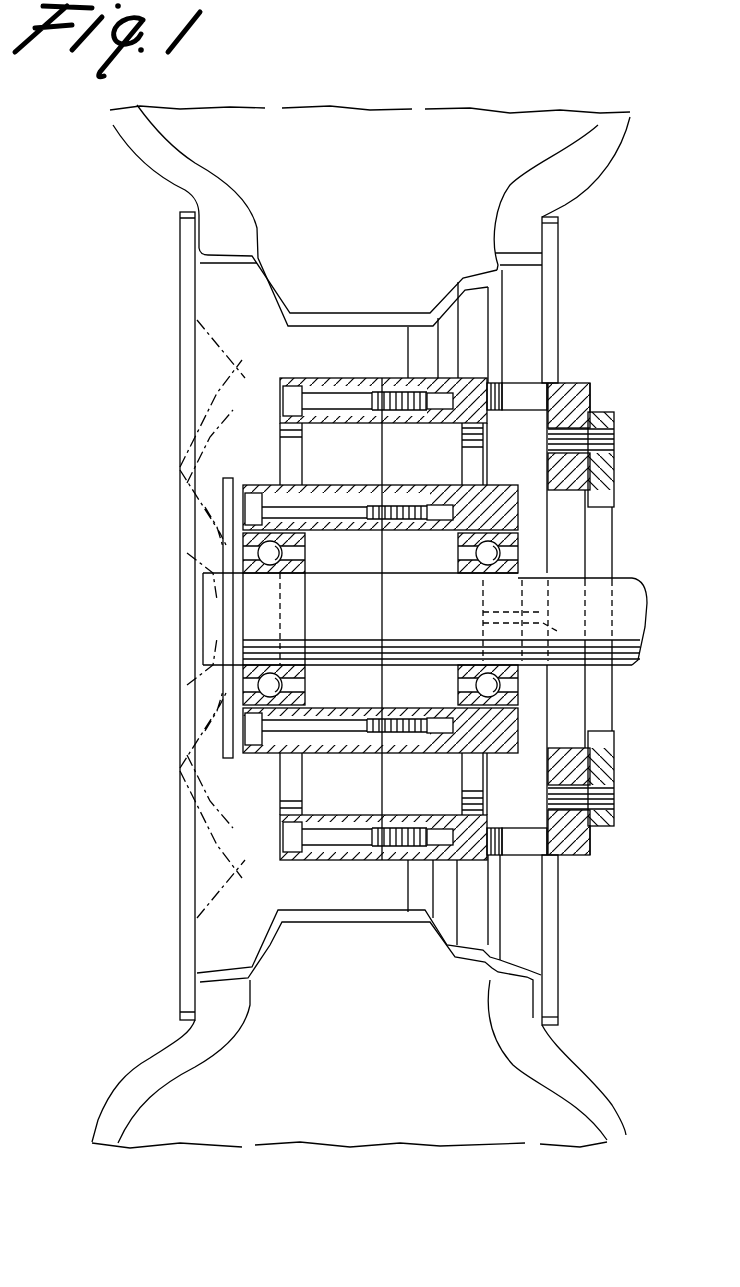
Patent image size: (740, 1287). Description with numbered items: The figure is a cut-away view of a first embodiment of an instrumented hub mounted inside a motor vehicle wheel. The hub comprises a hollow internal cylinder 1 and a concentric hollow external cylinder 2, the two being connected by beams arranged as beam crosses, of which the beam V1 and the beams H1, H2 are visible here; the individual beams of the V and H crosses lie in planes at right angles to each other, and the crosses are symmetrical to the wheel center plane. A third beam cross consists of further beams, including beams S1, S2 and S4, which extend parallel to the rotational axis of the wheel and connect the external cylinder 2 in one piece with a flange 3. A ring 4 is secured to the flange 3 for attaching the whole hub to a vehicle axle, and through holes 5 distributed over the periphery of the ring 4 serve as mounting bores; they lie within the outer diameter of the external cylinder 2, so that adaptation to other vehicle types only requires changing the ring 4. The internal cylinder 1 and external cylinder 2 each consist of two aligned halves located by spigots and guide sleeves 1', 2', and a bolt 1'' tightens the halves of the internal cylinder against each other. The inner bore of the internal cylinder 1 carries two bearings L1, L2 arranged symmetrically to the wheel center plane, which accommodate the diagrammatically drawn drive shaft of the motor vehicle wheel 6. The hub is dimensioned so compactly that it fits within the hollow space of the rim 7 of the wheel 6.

The internal cylinder 1 is at (425, 619).
The spigots and guide sleeves 1' is at (395, 760).
The bolt 1'' is at (246, 642).
The external cylinder 2 is at (383, 378).
The spigots and guide sleeves 2' is at (383, 818).
The flange 3 is at (590, 383).
The ring 4 is at (618, 417).
The through holes 5 is at (573, 447).
The motor vehicle wheel 6 is at (190, 253).
The rim 7 is at (247, 373).
The beam S1 is at (517, 380).
The beam S2 is at (523, 867).
The beam S4 is at (562, 640).
The beam V1 is at (293, 452).
The beam H1 is at (473, 450).
The beam H2 is at (470, 785).
The bearing L1 is at (327, 553).
The bearing L2 is at (522, 565).